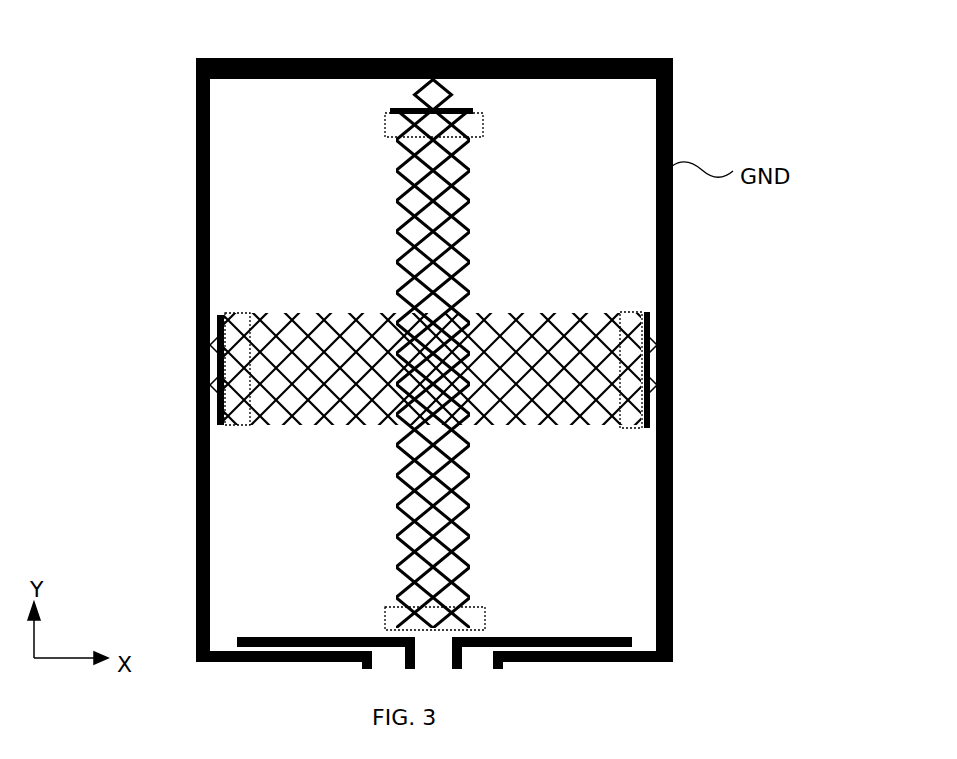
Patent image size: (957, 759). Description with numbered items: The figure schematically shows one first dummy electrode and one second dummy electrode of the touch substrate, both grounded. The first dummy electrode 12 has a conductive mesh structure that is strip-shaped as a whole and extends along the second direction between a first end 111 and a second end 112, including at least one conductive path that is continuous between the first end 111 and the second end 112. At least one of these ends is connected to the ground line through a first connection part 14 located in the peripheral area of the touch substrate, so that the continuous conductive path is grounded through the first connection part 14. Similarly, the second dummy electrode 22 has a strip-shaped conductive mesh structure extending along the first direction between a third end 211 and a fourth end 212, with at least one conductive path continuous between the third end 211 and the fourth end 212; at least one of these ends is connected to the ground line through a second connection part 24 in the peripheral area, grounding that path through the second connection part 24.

The first dummy electrode 12 is at (472, 173).
The first connection part 14 is at (395, 108).
The first end 111 is at (483, 123).
The second end 112 is at (472, 603).
The second dummy electrode 22 is at (575, 428).
The third end 211 is at (238, 428).
The fourth end 212 is at (635, 430).
The second connection part 24 is at (197, 347).